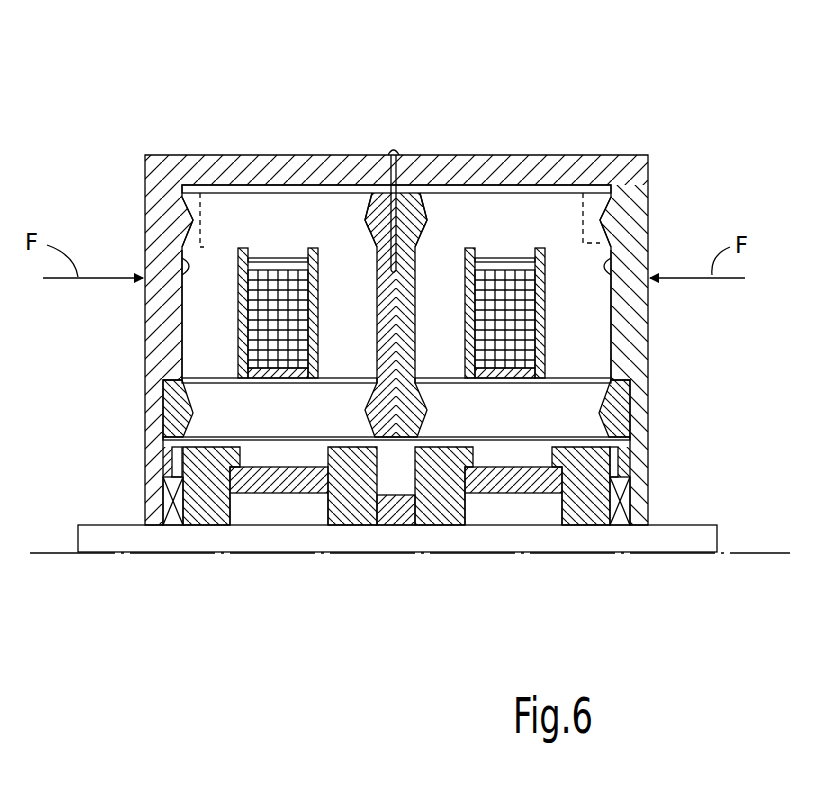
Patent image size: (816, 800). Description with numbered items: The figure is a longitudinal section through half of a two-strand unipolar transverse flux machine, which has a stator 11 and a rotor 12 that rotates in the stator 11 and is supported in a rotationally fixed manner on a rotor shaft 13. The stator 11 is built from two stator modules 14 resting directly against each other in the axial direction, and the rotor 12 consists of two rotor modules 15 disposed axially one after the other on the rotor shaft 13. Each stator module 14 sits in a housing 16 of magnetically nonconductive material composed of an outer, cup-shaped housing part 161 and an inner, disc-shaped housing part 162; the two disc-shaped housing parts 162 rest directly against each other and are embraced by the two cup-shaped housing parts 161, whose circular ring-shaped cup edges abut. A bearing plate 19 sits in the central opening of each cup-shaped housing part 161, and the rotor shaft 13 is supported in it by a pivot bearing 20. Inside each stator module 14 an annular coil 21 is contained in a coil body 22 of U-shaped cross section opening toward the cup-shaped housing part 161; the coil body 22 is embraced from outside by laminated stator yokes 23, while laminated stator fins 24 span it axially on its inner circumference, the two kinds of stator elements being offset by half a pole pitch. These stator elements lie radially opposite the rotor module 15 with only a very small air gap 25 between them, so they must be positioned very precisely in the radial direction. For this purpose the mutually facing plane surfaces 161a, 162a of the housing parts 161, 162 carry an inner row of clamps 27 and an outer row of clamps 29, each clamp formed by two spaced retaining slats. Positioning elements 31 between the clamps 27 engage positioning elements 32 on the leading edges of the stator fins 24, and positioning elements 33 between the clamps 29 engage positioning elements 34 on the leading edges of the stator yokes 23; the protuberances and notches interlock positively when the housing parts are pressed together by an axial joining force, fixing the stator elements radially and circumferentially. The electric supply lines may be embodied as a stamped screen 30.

The stator 11 is at (652, 205).
The rotor 12 is at (260, 558).
The rotor shaft 13 is at (705, 530).
The stator module 14 is at (280, 148).
The rotor module 15 is at (290, 512).
The housing 16 is at (218, 148).
The cup-shaped housing part 161 is at (177, 183).
The plane surface 161a is at (182, 258).
The disc-shaped housing part 162 is at (380, 278).
The plane surface 162a is at (366, 232).
The bearing plate 19 is at (160, 487).
The pivot bearing 20 is at (168, 525).
The annular coil 21 is at (302, 327).
The coil body 22 is at (255, 342).
The stator yoke 23 is at (213, 300).
The stator fin 24 is at (297, 405).
The air gap 25 is at (172, 447).
The clamp 27 is at (203, 387).
The clamp 29 is at (204, 195).
The stamped screen 30 is at (399, 152).
The positioning element 31 is at (180, 408).
The positioning element 32 is at (603, 415).
The positioning element 33 is at (190, 222).
The positioning element 34 is at (603, 226).